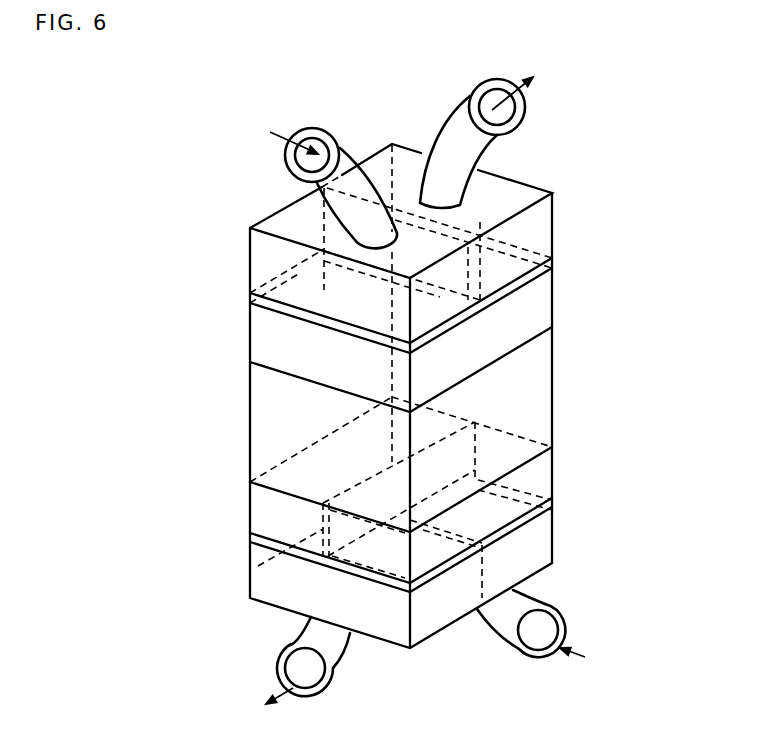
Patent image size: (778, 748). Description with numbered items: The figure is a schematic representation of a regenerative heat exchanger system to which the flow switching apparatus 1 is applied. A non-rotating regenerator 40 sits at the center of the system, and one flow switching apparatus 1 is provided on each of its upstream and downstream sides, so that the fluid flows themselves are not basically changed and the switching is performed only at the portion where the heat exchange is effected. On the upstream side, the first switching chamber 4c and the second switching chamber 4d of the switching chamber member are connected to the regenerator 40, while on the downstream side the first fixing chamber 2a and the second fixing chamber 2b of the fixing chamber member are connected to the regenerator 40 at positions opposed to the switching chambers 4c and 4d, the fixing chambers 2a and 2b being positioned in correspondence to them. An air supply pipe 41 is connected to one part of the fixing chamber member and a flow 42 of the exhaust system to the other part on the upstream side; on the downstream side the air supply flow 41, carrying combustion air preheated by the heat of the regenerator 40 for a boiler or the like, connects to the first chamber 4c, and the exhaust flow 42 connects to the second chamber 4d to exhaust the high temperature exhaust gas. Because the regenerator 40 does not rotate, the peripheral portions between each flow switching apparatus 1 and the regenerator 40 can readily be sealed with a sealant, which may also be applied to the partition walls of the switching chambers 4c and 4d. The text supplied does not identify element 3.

The flow switching apparatus 1 is at (662, 190).
The first fixing chamber 2a is at (303, 231).
The second fixing chamber 2b is at (470, 209).
The heat exchange element 3 is at (553, 262).
The first switching chamber 4c is at (290, 351).
The second switching chamber 4d is at (553, 315).
The regenerator 40 is at (545, 406).
The air supply pipe 41 is at (356, 156).
The exhaust system flow 42 is at (457, 122).